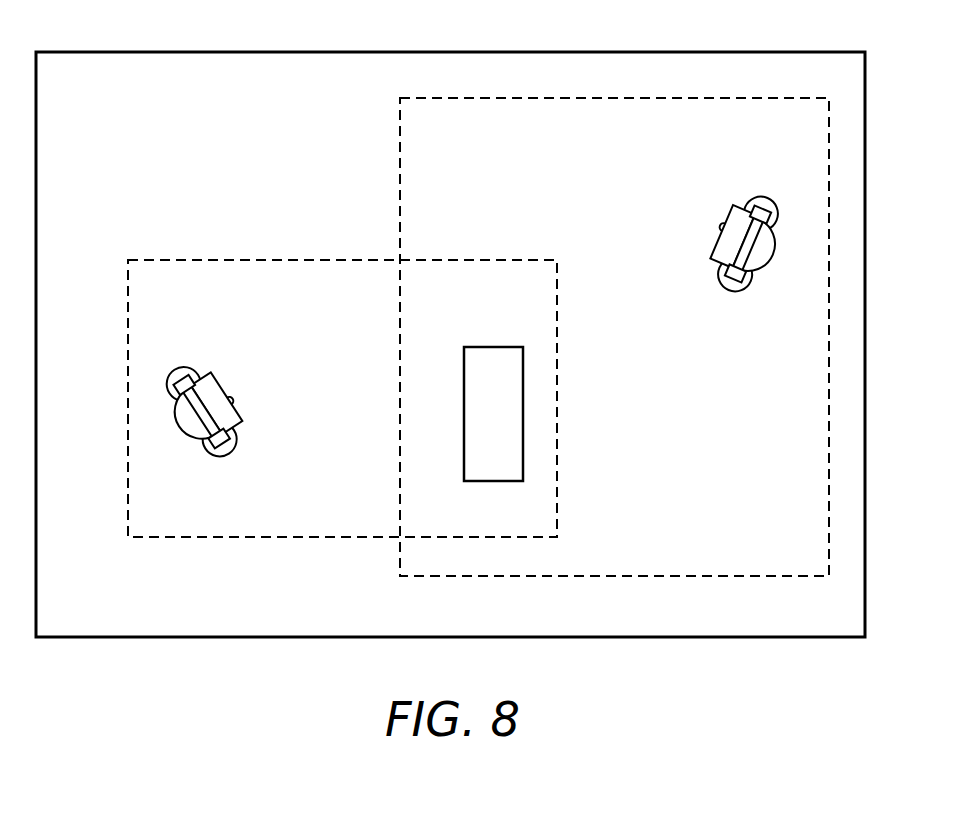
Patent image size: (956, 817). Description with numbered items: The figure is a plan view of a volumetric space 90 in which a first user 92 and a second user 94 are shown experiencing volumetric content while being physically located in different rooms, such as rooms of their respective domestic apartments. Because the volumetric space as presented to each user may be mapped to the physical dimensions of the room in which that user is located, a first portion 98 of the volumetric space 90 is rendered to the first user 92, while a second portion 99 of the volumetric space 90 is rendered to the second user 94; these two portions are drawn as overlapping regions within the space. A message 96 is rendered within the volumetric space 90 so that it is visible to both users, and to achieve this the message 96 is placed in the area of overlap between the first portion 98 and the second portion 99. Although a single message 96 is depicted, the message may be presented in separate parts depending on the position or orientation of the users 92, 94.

The volumetric space 90 is at (820, 658).
The first user 92 is at (219, 457).
The second user 94 is at (740, 297).
The message 96 is at (490, 346).
The first portion 98 is at (150, 258).
The second portion 99 is at (398, 108).